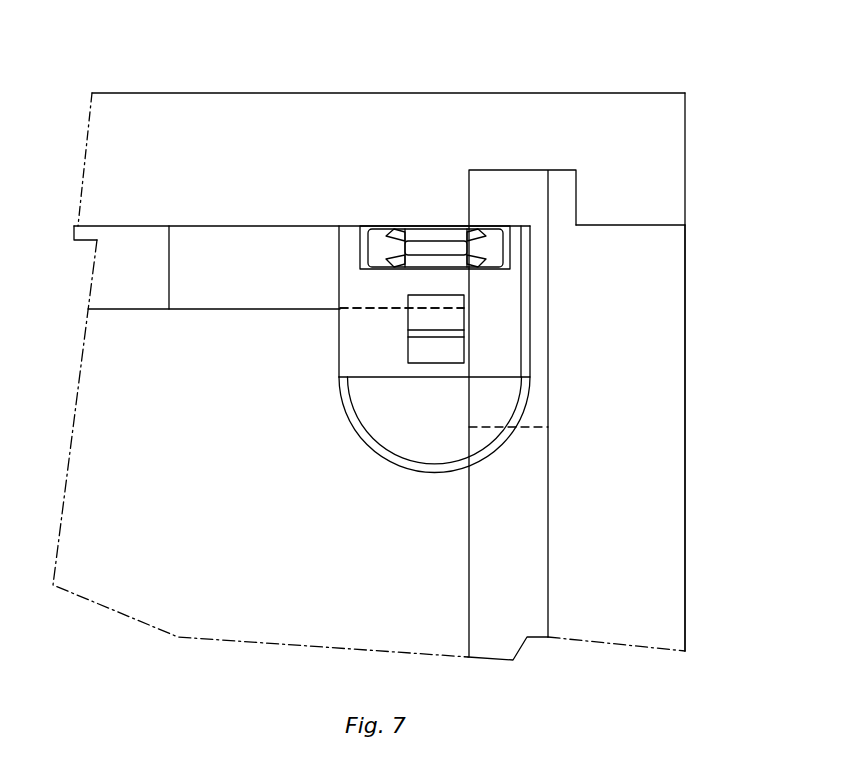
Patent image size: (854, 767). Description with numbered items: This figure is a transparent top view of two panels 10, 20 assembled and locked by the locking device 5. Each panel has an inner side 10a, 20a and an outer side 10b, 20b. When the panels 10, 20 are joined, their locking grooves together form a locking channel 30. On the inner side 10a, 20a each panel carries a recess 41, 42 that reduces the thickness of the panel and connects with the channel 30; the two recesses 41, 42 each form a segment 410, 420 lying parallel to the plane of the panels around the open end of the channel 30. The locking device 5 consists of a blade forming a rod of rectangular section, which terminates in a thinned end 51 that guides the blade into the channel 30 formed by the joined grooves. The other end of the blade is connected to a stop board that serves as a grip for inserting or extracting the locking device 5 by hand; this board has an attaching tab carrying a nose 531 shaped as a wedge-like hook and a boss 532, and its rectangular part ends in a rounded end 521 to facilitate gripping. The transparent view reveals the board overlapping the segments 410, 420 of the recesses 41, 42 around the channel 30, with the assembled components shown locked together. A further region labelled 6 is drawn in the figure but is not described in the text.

The housing 20 is at (264, 166).
The housing top surface 20b is at (275, 93).
The housing bottom surface 20a is at (118, 309).
The recess 42 is at (128, 271).
The recess portion 420 is at (268, 279).
The bearing 30 is at (426, 226).
The sensor assembly 5 is at (233, 322).
The sensor body 51 is at (380, 246).
The first sensor element 531 is at (421, 323).
The second sensor element 532 is at (420, 352).
The outer wall 410 is at (536, 397).
The inner wall 521 is at (408, 438).
The shaft portion 41 is at (518, 534).
The base 10 is at (619, 569).
The base bottom surface 10a is at (467, 610).
The base side surface 10b is at (685, 417).
The cavity 6 is at (278, 594).